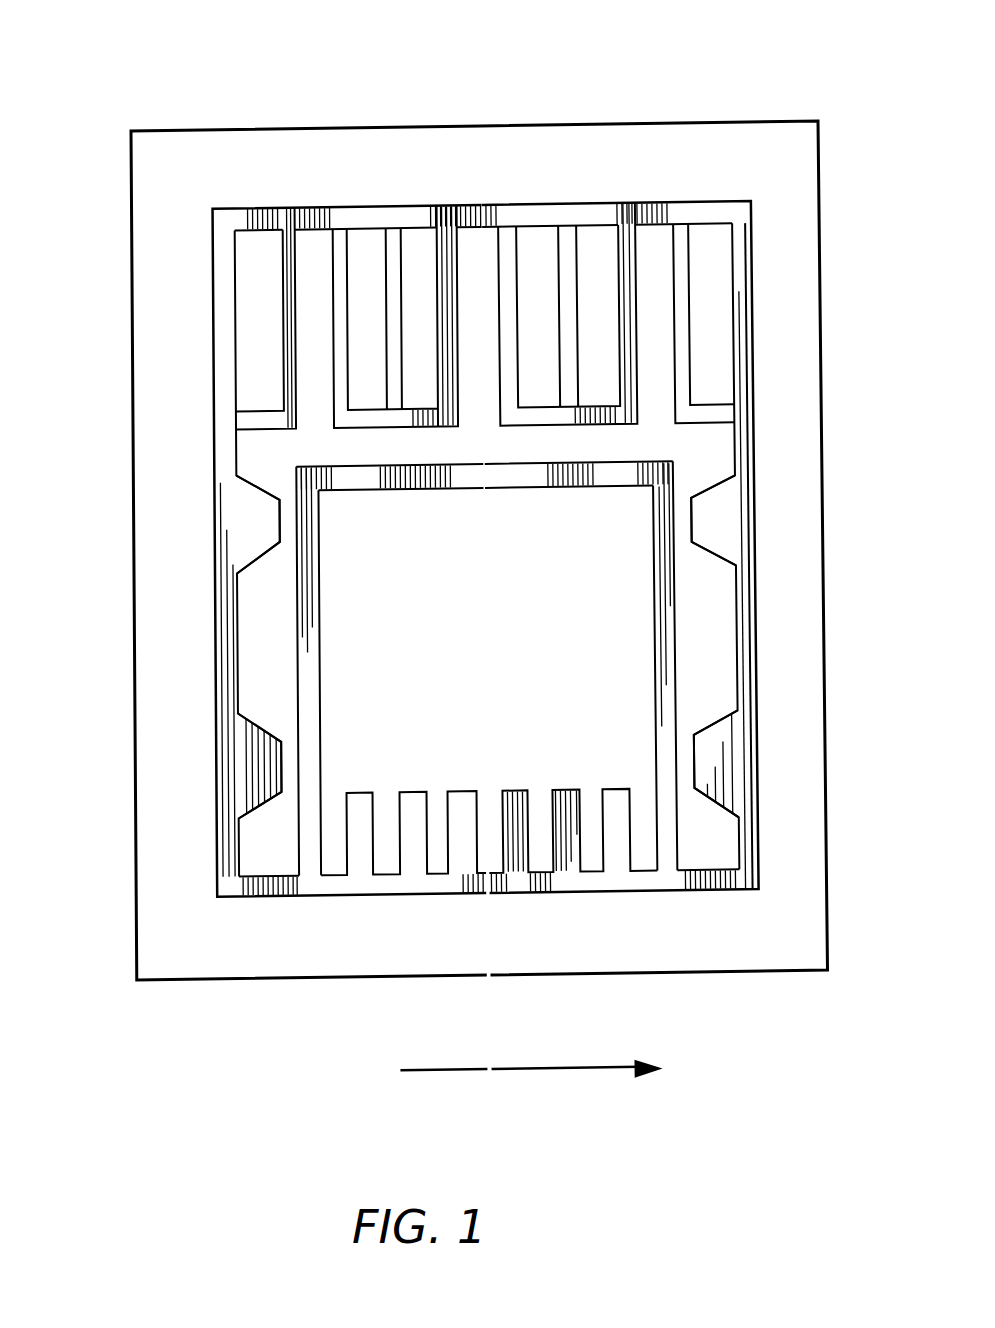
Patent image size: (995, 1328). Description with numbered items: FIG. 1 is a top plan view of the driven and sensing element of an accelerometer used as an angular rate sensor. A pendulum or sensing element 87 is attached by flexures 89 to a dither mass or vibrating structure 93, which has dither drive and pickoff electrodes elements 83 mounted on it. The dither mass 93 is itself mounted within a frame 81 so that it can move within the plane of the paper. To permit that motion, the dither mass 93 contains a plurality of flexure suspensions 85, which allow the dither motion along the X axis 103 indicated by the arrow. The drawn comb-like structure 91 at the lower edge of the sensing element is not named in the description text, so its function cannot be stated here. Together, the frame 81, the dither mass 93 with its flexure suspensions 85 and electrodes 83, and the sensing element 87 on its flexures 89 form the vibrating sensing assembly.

The frame 81 is at (558, 171).
The dither drive and pickoff electrodes elements 83 is at (471, 273).
The flexure suspensions 85 is at (693, 523).
The sensing element 87 is at (575, 552).
The flexures 89 is at (353, 473).
The sense comb structure 91 is at (485, 848).
The dither mass 93 is at (709, 852).
The X axis 103 is at (549, 1080).